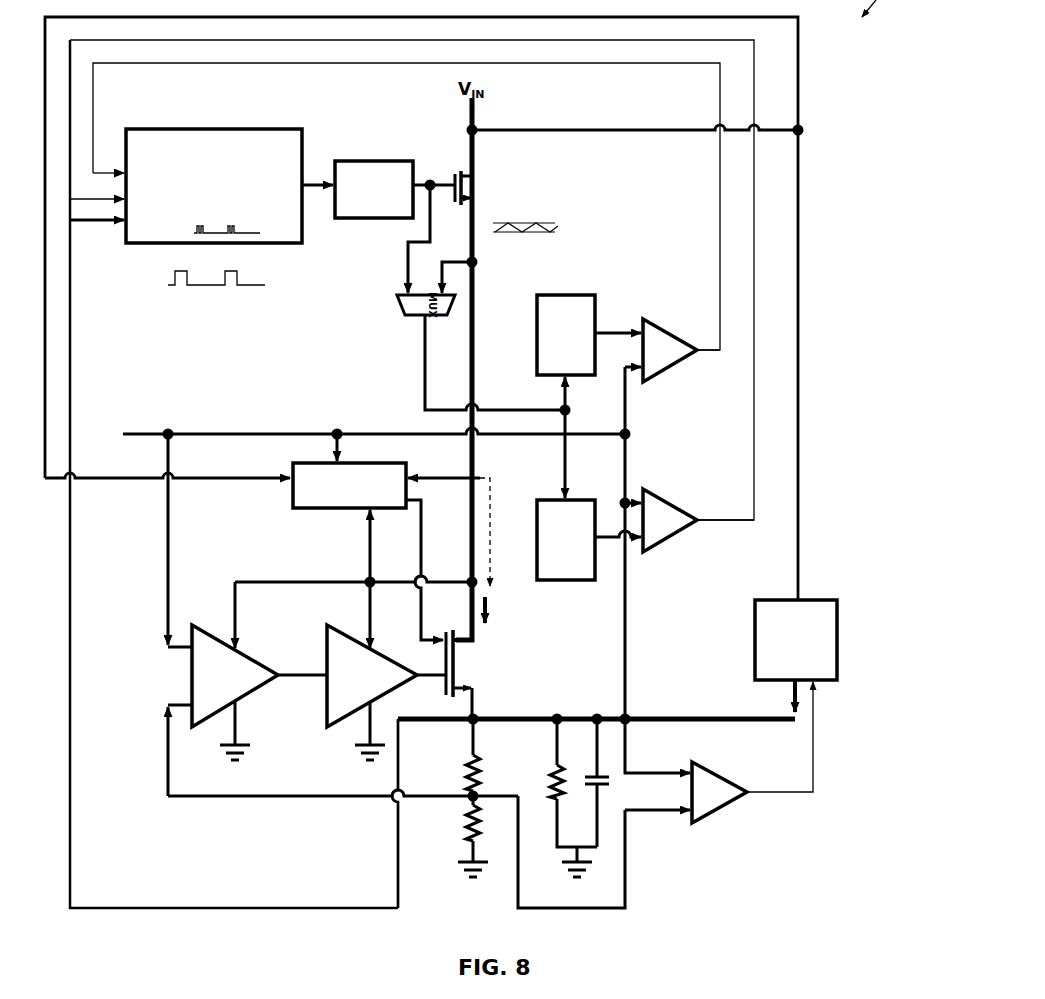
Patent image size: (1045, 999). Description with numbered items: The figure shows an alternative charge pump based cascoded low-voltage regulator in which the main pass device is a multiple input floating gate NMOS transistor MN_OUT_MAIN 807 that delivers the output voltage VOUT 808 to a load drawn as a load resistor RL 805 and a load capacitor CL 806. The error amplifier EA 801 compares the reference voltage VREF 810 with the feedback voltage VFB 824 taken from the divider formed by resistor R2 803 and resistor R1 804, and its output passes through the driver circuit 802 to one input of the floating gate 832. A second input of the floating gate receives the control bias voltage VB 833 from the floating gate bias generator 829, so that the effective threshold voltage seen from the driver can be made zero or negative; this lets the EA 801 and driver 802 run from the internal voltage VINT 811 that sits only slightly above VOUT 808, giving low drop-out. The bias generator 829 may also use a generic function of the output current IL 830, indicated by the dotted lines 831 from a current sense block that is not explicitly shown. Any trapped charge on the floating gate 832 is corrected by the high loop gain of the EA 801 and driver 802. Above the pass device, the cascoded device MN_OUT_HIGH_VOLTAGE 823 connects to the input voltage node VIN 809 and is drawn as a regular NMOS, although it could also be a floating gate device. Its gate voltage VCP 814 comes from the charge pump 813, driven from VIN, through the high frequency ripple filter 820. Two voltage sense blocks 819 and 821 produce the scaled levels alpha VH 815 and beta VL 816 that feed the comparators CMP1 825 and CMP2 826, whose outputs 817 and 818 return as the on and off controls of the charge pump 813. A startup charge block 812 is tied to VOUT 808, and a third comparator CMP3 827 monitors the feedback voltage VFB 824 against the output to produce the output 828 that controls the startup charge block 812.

The error amplifier 801 is at (206, 622).
The driver circuit 802 is at (320, 641).
The feedback resistor R2 803 is at (462, 757).
The feedback resistor R1 804 is at (460, 840).
The load resistor RL 805 is at (553, 761).
The load capacitor CL 806 is at (619, 782).
The main output transistor MN_OUT_MAIN 807 is at (480, 652).
The output voltage VOUT 808 is at (692, 705).
The input voltage VIN node 809 is at (482, 126).
The reference voltage VREF 810 is at (180, 425).
The internal voltage VINT 811 is at (364, 576).
The startup charge circuit 812 is at (840, 640).
The charge pump 813 is at (200, 127).
The charge pump output voltage VCP 814 is at (433, 157).
The scaled high voltage alpha VH 815 is at (607, 330).
The scaled low voltage beta VL 816 is at (605, 516).
The comparator CMP1 output 817 is at (713, 355).
The comparator CMP2 output 818 is at (751, 528).
The voltage sense block (high) 819 is at (534, 292).
The high frequency ripple filter 820 is at (363, 158).
The voltage sense block (low) 821 is at (553, 496).
The cascoded device 823 is at (484, 180).
The feedback voltage VFB 824 is at (294, 819).
The comparator CMP1 825 is at (682, 330).
The comparator CMP2 826 is at (687, 498).
The comparator CMP3 827 is at (739, 805).
The comparator CMP3 output 828 is at (818, 790).
The bias generator block 829 is at (291, 511).
The output current IL 830 is at (508, 609).
The current sense indication 831 is at (461, 482).
The floating gate 832 is at (451, 627).
The bias voltage VB 833 is at (418, 634).